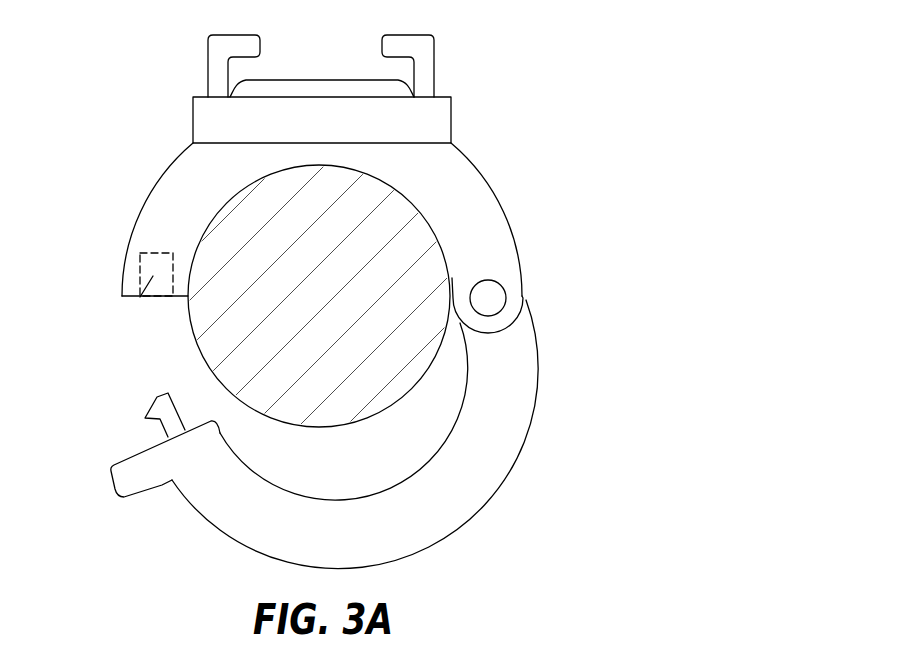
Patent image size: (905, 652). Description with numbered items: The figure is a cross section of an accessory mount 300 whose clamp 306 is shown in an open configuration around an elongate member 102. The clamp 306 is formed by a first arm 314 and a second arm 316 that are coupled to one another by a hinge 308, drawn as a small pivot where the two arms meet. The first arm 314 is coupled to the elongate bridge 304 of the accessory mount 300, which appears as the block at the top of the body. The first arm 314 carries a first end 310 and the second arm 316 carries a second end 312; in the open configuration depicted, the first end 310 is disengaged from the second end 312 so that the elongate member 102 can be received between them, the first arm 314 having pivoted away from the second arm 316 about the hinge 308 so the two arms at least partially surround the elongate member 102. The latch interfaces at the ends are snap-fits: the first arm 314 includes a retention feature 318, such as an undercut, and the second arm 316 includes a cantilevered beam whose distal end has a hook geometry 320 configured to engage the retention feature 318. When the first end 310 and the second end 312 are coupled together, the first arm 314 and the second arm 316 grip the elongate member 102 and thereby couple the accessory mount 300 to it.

The accessory mount 300 is at (351, 152).
The elongate bridge 304 is at (192, 116).
The clamp 306 is at (351, 219).
The first arm 314 is at (488, 242).
The hinge 308 is at (488, 298).
The retention feature 318 is at (150, 275).
The first end 310 is at (122, 297).
The elongate member 102 is at (205, 343).
The second arm 316 is at (497, 488).
The second end 312 is at (200, 422).
The hook geometry 320 is at (148, 433).